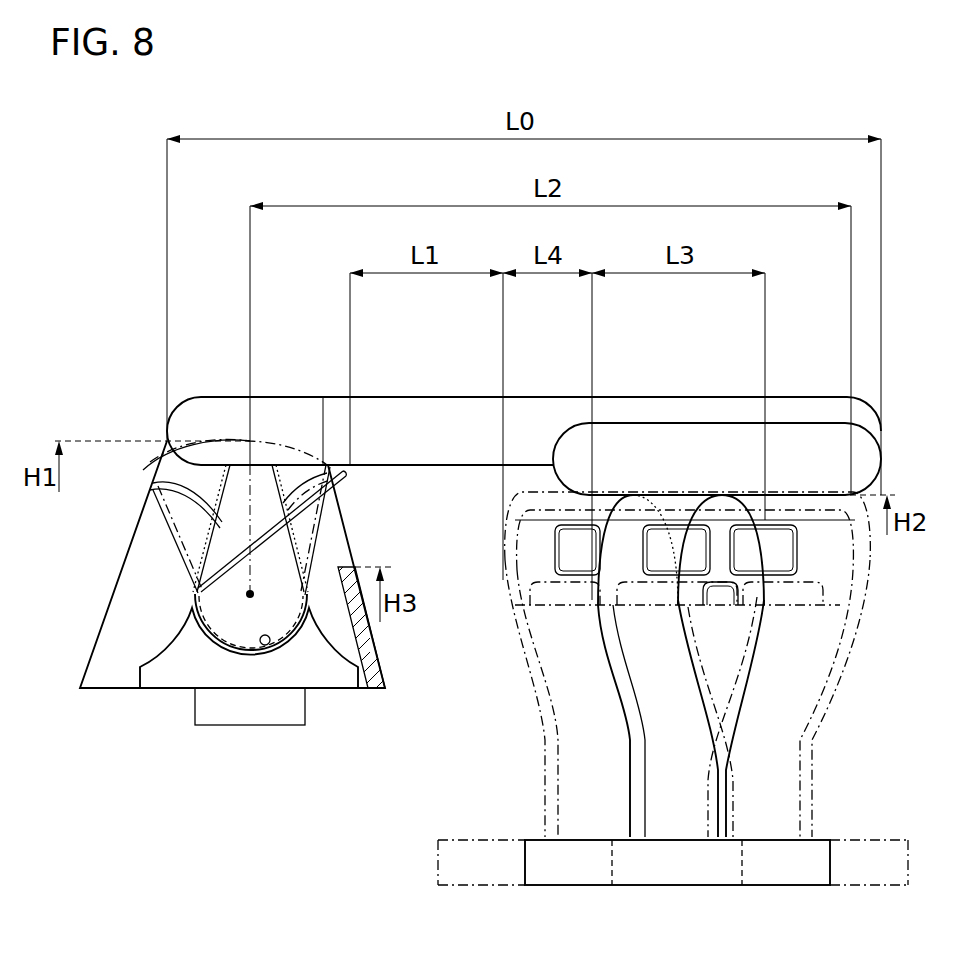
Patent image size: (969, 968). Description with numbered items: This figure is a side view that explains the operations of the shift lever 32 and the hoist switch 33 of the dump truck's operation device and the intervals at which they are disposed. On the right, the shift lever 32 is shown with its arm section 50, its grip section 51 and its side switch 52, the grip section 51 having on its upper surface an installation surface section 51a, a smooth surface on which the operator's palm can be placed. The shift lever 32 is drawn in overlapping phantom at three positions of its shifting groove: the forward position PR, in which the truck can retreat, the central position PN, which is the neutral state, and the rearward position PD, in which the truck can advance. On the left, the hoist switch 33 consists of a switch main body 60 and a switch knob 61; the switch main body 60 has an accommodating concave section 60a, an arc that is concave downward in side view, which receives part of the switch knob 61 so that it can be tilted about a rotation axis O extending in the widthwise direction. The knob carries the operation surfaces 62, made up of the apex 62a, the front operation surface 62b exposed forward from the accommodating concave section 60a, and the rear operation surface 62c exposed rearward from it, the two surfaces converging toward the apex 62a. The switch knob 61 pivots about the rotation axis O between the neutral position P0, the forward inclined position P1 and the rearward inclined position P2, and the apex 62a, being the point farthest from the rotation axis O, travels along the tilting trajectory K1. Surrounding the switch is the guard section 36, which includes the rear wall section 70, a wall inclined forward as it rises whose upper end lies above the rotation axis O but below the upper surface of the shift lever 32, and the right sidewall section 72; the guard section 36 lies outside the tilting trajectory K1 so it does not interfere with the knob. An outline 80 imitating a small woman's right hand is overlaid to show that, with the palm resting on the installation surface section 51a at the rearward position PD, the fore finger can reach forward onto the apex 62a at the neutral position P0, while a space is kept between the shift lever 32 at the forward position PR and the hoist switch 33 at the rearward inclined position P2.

The right hand outline 80 is at (815, 403).
The installation surface section 51a is at (667, 495).
The grip section 51 is at (757, 548).
The side switch 52 is at (690, 607).
The arm section 50 is at (690, 740).
The shift lever 32 is at (614, 690).
The guard section 36 is at (82, 649).
The right sidewall section 72 is at (122, 613).
The hoist switch 33 is at (192, 537).
The operation surface 62 is at (238, 407).
The apex 62a is at (250, 441).
The front operation surface 62b is at (153, 483).
The rear operation surface 62c is at (303, 503).
The switch knob 61 is at (217, 593).
The switch main body 60 is at (176, 665).
The accommodating concave section 60a is at (262, 645).
The rear wall section 70 is at (370, 656).
The rotation axis O is at (250, 594).
The neutral position P0 is at (250, 440).
The forward inclined position P1 is at (160, 514).
The rearward inclined position P2 is at (347, 507).
The tilting trajectory K1 is at (323, 398).
The forward position PR is at (537, 690).
The central position PN is at (735, 683).
The rearward position PD is at (835, 668).